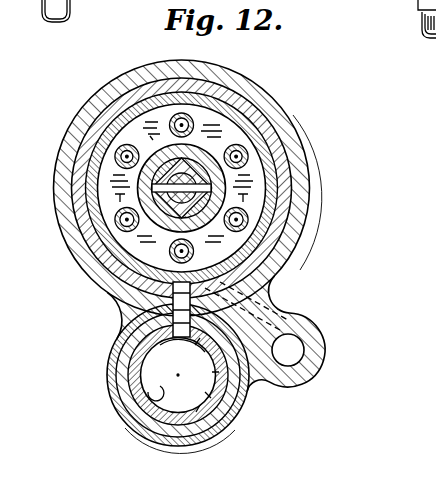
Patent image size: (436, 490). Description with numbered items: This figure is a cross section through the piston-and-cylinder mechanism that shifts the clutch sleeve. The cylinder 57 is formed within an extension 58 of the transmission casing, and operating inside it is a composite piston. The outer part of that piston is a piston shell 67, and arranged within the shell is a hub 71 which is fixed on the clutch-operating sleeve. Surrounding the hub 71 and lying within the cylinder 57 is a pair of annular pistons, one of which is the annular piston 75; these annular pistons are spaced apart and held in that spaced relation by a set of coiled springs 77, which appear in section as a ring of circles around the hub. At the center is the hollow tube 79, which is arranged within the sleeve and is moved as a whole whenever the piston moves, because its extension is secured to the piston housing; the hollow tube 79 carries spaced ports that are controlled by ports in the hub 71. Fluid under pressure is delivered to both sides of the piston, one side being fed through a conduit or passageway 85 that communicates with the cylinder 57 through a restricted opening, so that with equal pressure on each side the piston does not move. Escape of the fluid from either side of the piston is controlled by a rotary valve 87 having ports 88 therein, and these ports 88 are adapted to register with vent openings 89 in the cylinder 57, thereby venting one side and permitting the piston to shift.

The cylinder 57 is at (284, 174).
The extension of the casing 58 is at (306, 149).
The piston shell 67 is at (268, 207).
The hub 71 is at (157, 236).
The annular piston 75 is at (103, 202).
The coiled springs 77 is at (192, 118).
The hollow tube 79 is at (204, 163).
The conduit or passageway 85 is at (292, 351).
The rotary valve 87 is at (128, 421).
The ports 88 is at (132, 352).
The vent openings 89 is at (191, 303).